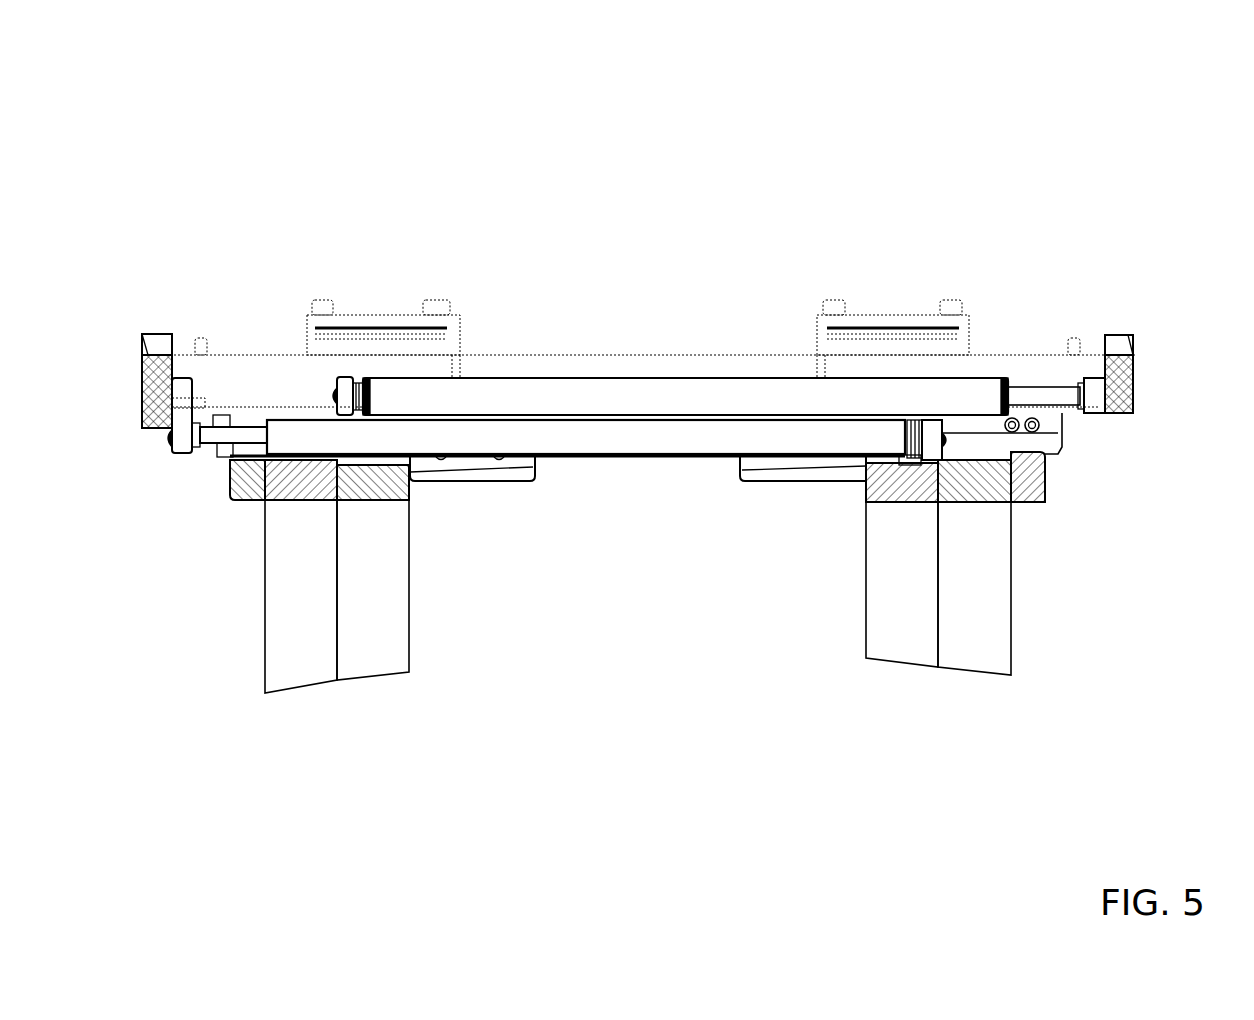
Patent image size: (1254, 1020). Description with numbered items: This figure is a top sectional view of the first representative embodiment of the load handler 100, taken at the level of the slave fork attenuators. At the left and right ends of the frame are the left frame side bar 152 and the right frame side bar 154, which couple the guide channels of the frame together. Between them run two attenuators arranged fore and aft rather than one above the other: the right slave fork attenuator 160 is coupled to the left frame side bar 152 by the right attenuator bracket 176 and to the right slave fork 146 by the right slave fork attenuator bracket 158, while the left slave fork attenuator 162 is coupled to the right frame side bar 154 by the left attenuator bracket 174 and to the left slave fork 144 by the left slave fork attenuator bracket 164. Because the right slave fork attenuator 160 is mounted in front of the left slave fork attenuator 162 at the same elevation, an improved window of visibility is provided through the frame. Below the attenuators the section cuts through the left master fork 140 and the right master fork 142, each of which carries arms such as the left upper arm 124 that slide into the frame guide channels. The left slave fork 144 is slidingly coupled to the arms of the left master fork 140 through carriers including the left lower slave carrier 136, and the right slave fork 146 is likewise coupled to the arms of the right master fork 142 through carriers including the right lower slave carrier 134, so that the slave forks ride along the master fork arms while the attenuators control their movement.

The load handler 100 is at (233, 97).
The first (left) upper arm 124 is at (1062, 447).
The second (right) lower slave carrier 134 is at (765, 468).
The first (left) lower slave carrier 136 is at (480, 470).
The first (left) master fork 140 is at (302, 488).
The second (right) master fork 142 is at (978, 478).
The first (left) slave fork 144 is at (387, 487).
The second (right) slave fork 146 is at (893, 487).
The first (left) frame side bar 152 is at (147, 392).
The second (right) frame side bar 154 is at (1118, 377).
The second (right) slave fork attenuator bracket 158 is at (927, 427).
The second (right) slave fork attenuator 160 is at (638, 439).
The first (left) slave fork attenuator 162 is at (740, 392).
The first (left) slave fork attenuator bracket 164 is at (342, 388).
The first (left) attenuator bracket 174 is at (1090, 403).
The second (right) attenuator bracket 176 is at (182, 440).